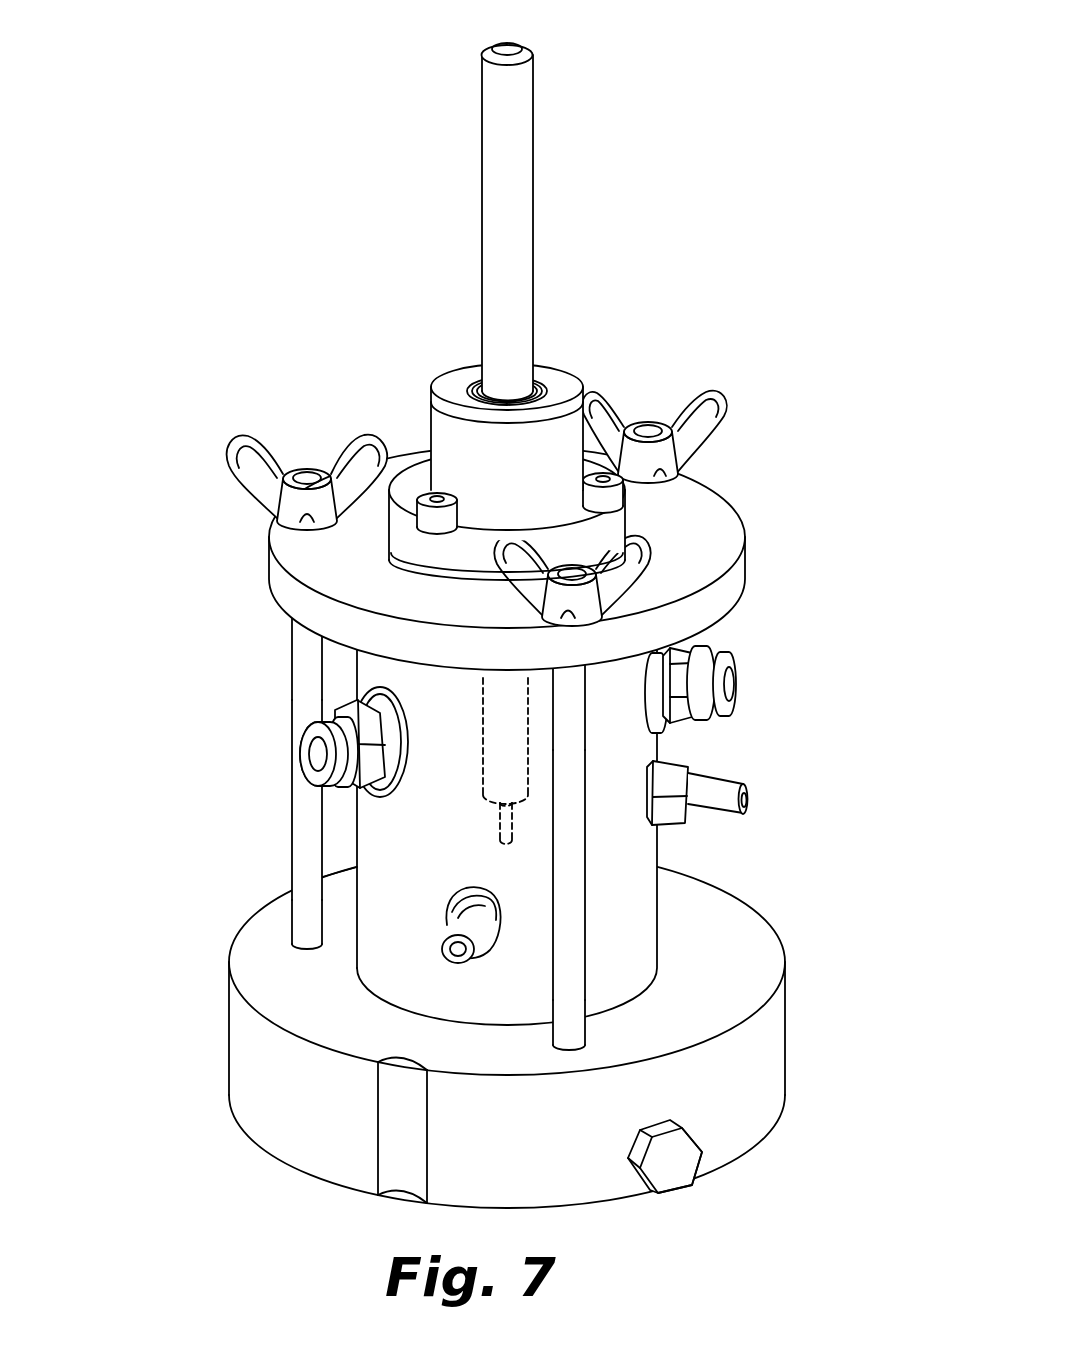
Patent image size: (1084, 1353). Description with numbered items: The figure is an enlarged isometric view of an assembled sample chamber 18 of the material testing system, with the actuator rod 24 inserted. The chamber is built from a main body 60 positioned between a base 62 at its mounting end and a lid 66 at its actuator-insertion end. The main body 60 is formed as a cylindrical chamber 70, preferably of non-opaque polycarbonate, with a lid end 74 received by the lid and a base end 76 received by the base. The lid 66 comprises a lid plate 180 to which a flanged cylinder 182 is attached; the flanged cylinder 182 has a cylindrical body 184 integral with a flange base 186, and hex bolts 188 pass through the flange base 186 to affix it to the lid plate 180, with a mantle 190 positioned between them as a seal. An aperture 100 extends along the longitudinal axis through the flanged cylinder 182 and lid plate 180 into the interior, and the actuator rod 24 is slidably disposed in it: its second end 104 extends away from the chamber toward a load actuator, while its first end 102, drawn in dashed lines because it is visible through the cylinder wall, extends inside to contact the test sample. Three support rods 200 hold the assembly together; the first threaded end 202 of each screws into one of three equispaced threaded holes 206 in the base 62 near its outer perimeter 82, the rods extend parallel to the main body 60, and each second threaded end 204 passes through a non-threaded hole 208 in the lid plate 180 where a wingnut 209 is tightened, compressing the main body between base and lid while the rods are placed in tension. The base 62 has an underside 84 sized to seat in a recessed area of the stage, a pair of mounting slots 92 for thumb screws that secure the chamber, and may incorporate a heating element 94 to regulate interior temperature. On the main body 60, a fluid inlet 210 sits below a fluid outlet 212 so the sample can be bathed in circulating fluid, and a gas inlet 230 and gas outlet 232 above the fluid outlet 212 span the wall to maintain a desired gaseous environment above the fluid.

The sample chamber 18 is at (500, 641).
The actuator rod 24 is at (512, 213).
The second end 104 is at (529, 43).
The aperture 100 is at (537, 391).
The flanged cylinder 182 is at (428, 420).
The cylindrical body 184 is at (462, 445).
The flange base 186 is at (413, 487).
The hex bolts 188 is at (607, 500).
The wingnuts 209 is at (233, 442).
The non-threaded holes 208 is at (303, 513).
The lid plate 180 is at (722, 527).
The lid 66 is at (300, 548).
The mantle 190 is at (463, 580).
The second threaded end 204 is at (303, 652).
The support rods 200 is at (307, 850).
The first threaded end 202 is at (327, 937).
The threaded holes 206 is at (292, 943).
The gas inlet 230 is at (337, 717).
The gas outlet 232 is at (730, 685).
The fluid outlet 212 is at (707, 795).
The fluid inlet 210 is at (467, 927).
The main body 60 is at (627, 932).
The lid end 74 is at (447, 677).
The base end 76 is at (387, 1003).
The first end 102 is at (478, 780).
The cylindrical chamber 70 is at (409, 965).
The base 62 is at (263, 1057).
The outer perimeter 82 is at (773, 1130).
The underside 84 is at (582, 1207).
The mounting slots 92 is at (405, 1140).
The heating element 94 is at (677, 1158).